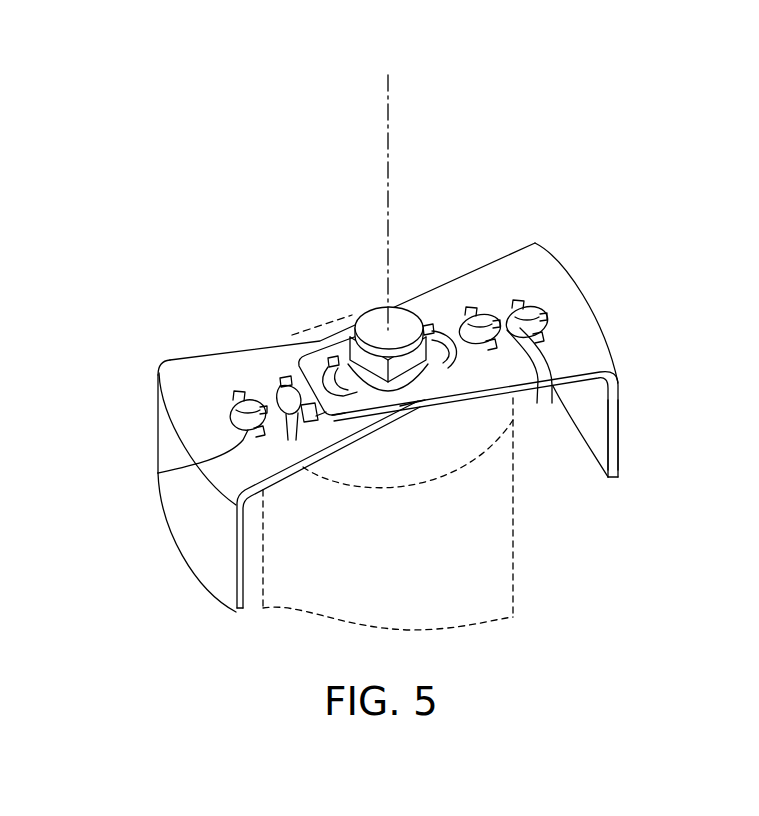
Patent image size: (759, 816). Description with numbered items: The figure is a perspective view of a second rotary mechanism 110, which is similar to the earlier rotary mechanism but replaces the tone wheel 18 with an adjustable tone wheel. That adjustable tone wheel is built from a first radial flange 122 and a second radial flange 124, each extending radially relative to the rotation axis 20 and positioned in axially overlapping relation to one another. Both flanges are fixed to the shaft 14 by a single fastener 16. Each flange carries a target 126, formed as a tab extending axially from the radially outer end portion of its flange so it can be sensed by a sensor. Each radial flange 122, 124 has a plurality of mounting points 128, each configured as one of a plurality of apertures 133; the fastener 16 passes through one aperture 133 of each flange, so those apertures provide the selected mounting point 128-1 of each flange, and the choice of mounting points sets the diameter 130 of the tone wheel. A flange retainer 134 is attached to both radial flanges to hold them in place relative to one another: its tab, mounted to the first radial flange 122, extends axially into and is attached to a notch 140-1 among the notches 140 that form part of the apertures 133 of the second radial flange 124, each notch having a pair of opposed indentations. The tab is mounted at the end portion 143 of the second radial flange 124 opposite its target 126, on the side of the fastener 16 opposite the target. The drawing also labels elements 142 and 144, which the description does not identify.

The second rotary mechanism 110 is at (178, 128).
The tone wheel 18 is at (250, 259).
The rotation axis 20 is at (390, 103).
The fastener 16 is at (378, 322).
The first radial flange 122 is at (530, 255).
The second radial flange 124 is at (180, 385).
The second plate portion 144 is at (573, 352).
The target 126 is at (225, 575).
The diameter 130 is at (217, 425).
The mounting points 128 is at (158, 473).
The selected mounting point 128-1 is at (416, 409).
The apertures 133 is at (228, 394).
The flange retainer 134 is at (283, 377).
The clamp plate 142 is at (308, 360).
The notches 140 is at (275, 412).
The notch 140-1 is at (308, 424).
The end portion 143 is at (316, 416).
The shaft 14 is at (513, 579).